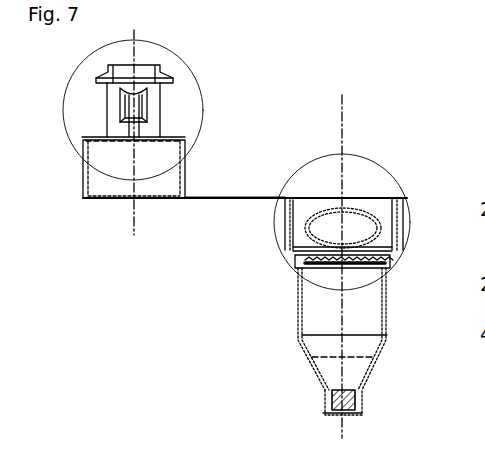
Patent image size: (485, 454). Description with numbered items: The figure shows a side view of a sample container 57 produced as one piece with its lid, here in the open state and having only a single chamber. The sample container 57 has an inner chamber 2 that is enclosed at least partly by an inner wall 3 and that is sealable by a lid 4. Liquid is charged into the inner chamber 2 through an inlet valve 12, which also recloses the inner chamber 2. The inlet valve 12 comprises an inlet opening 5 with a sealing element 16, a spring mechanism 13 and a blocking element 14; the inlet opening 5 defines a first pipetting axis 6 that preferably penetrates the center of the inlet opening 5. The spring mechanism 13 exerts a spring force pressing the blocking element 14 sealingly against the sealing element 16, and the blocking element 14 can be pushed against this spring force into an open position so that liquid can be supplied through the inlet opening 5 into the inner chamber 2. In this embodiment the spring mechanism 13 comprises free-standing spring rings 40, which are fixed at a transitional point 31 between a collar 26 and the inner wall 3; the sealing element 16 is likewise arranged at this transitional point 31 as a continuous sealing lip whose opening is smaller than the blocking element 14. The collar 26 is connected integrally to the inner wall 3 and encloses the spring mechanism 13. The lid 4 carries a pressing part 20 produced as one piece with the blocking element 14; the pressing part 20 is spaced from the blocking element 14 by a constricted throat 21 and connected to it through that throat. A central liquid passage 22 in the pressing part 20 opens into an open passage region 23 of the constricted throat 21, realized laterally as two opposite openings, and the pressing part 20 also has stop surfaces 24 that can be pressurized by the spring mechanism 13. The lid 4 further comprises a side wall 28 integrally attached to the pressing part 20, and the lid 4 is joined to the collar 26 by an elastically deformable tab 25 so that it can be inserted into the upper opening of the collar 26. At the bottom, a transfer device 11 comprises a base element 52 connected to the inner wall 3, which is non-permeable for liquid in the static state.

The inner chamber 2 is at (366, 317).
The inner wall 3 is at (300, 348).
The lid 4 is at (125, 168).
The inlet opening 5 is at (358, 214).
The first pipetting axis 6 is at (133, 218).
The transfer device 11 is at (332, 400).
The inlet valve 12 is at (330, 153).
The spring mechanism 13 is at (296, 242).
The blocking element 14 is at (172, 78).
The sealing element 16 is at (300, 270).
The pressing part 20 is at (112, 144).
The constricted throat 21 is at (155, 107).
The central liquid passage 22 is at (136, 136).
The open passage region 23 is at (132, 108).
The stop surfaces 24 is at (97, 137).
The elastically deformable tab 25 is at (227, 197).
The collar 26 is at (288, 222).
The side wall 28 is at (84, 157).
The transitional point 31 is at (388, 252).
The spring rings 40 is at (363, 213).
The base element 52 is at (357, 412).
The sample container 57 is at (203, 297).